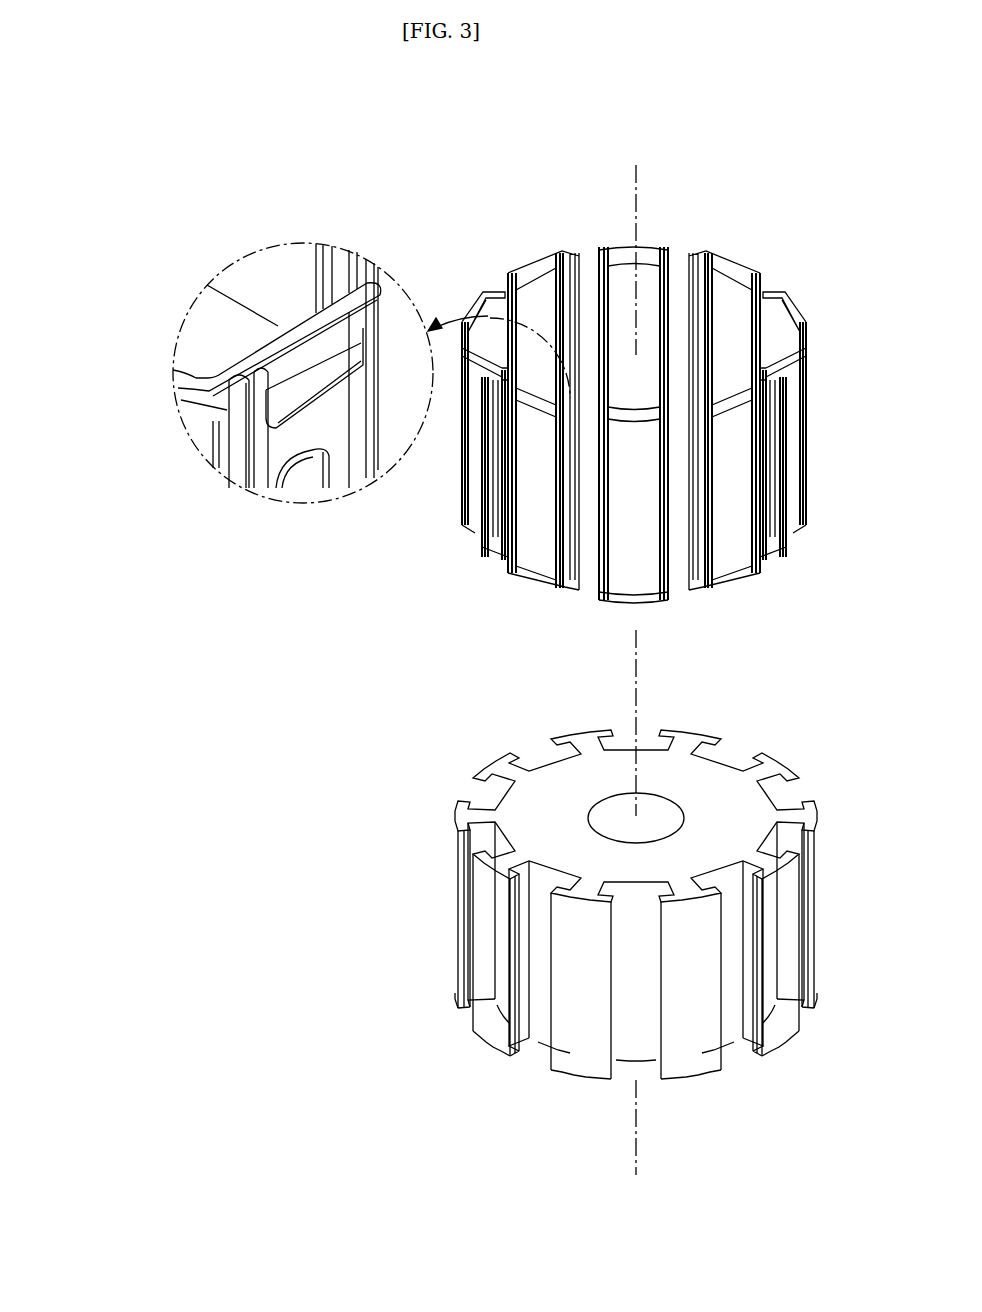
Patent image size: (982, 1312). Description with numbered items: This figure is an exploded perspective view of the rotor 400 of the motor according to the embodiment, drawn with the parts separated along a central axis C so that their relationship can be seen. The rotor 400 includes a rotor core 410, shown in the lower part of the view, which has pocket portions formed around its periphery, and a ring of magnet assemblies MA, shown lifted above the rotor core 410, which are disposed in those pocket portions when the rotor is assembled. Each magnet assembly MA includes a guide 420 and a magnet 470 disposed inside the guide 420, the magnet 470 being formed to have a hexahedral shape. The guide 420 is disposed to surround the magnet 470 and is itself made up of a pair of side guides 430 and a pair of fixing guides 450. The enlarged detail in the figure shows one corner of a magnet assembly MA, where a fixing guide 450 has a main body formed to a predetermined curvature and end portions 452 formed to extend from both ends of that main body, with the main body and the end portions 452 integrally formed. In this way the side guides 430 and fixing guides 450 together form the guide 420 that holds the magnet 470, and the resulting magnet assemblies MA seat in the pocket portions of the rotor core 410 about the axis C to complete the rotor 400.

The rotor 400 is at (141, 107).
The rotor core 410 is at (430, 862).
The guide 420 is at (502, 568).
The side guide 430 is at (250, 443).
The fixing guide 450 is at (197, 387).
The end portion 452 is at (323, 347).
The magnet 470 is at (530, 513).
The magnet assembly MA is at (651, 239).
The central axis C is at (635, 685).